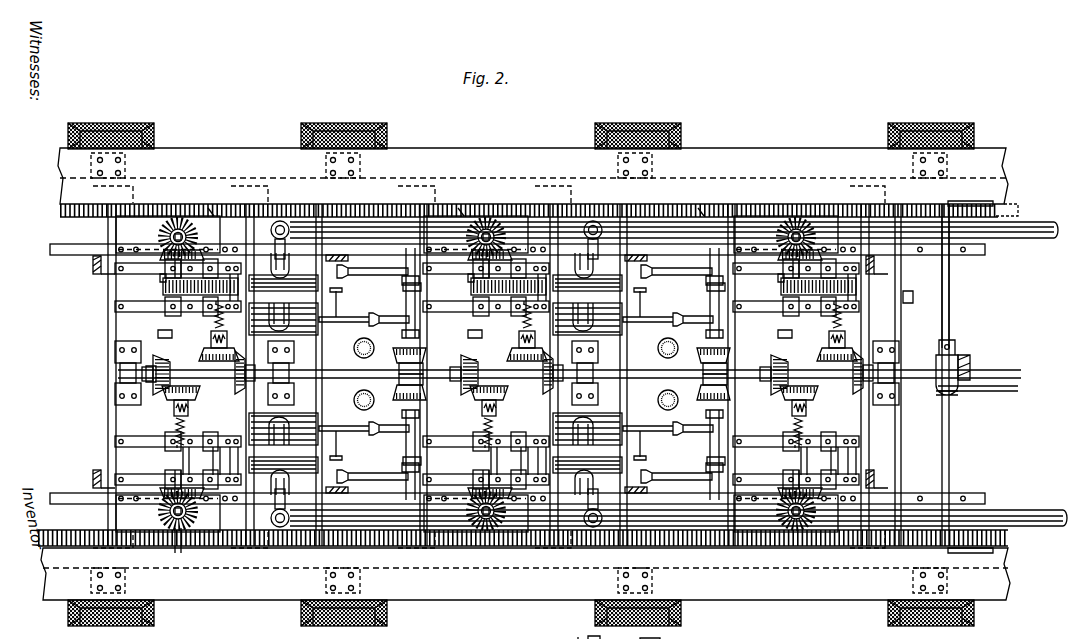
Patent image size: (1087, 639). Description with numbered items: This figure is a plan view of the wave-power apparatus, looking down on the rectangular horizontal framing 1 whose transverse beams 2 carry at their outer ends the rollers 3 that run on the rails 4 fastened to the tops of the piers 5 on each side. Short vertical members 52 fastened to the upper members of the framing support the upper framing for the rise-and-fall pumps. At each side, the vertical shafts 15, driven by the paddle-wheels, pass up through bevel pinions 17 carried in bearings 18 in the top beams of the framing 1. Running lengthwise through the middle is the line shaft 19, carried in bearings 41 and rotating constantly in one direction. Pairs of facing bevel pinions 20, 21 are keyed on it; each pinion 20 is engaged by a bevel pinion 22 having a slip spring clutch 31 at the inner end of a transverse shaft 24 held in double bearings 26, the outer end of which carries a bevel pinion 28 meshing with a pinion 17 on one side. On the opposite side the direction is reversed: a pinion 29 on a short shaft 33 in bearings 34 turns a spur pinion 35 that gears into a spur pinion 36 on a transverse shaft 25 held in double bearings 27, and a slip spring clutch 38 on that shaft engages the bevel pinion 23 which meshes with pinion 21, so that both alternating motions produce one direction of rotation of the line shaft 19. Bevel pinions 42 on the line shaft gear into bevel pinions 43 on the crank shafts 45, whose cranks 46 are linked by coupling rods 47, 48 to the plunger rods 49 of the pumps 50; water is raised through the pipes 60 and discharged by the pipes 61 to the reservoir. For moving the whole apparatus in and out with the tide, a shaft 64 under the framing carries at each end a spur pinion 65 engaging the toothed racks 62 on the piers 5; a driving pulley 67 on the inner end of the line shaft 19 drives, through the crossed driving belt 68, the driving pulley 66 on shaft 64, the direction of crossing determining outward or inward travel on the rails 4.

The horizontal framing 1 is at (50, 242).
The transverse beams 2 is at (100, 368).
The rollers 3 is at (125, 190).
The rails 4 is at (52, 194).
The piers 5 is at (108, 128).
The vertical shaft 15 is at (178, 214).
The bevel pinion 17 is at (132, 228).
The bearing 18 is at (140, 215).
The line shaft 19 is at (200, 372).
The bevel pinion 20 is at (156, 358).
The bevel pinion 21 is at (100, 378).
The bevel pinion 22 is at (160, 392).
The bevel pinion 23 is at (512, 326).
The horizontal transverse shaft 24 is at (178, 455).
The horizontal transverse shaft 25 is at (108, 298).
The double bearings 26 is at (172, 470).
The double bearings 27 is at (228, 266).
The bevel pinion 28 is at (165, 538).
The pinion 29 is at (205, 198).
The slip spring clutch 31 is at (165, 430).
The short shaft 33 is at (155, 276).
The bearings 34 is at (164, 326).
The spur pinion 35 is at (152, 278).
The spur pinion 36 is at (275, 213).
The slip spring clutch 38 is at (260, 343).
The bearings 41 is at (286, 378).
The bevel pinions 42 is at (418, 352).
The bevel pinion 43 is at (383, 348).
The crank shafts 45 is at (380, 424).
The cranks 46 is at (390, 263).
The coupling rods 47 is at (398, 440).
The coupling rods 48 is at (699, 279).
The plunger rods 49 is at (328, 304).
The pumps 50 is at (283, 312).
The vertical members 52 is at (330, 247).
The pipes 60 is at (346, 338).
The pipes 61 is at (284, 216).
The toothed racks 62 is at (60, 206).
The shaft 64 is at (941, 310).
The spur pinion 65 is at (985, 193).
The driving pulley 66 is at (962, 350).
The driving pulley 67 is at (945, 350).
The driving belt 68 is at (960, 375).